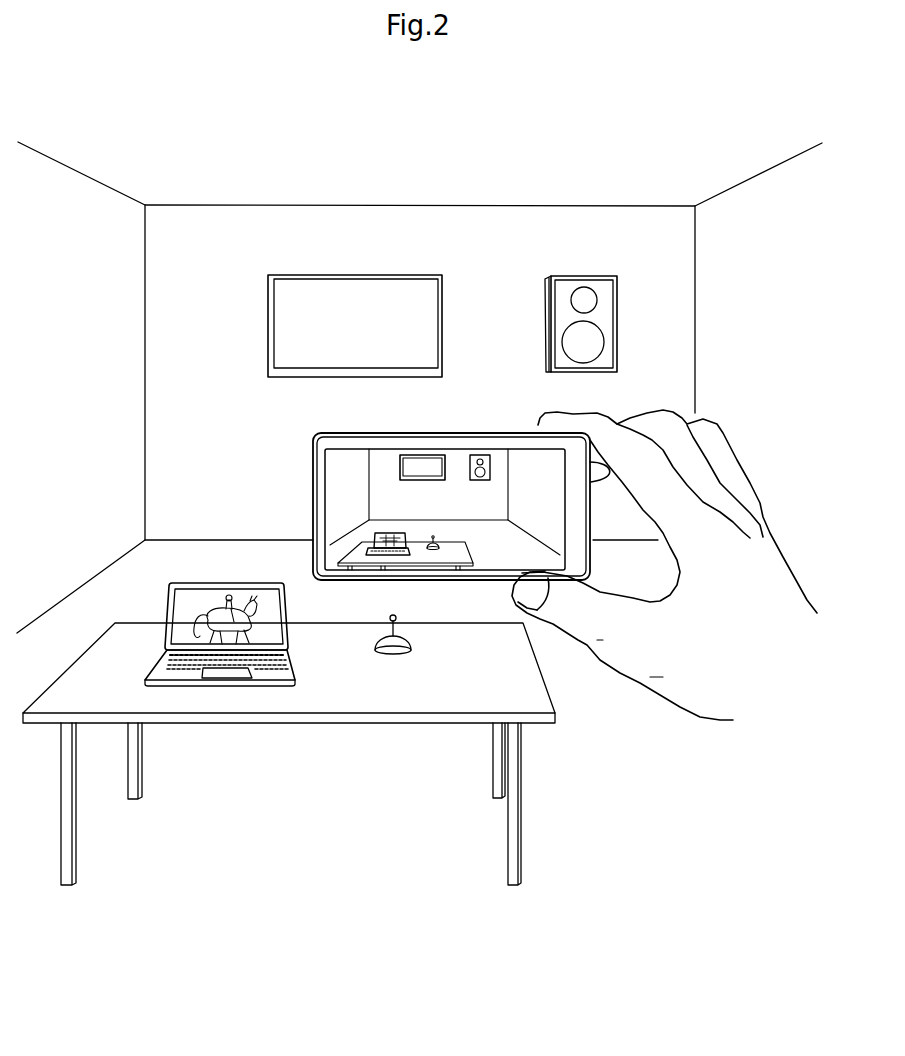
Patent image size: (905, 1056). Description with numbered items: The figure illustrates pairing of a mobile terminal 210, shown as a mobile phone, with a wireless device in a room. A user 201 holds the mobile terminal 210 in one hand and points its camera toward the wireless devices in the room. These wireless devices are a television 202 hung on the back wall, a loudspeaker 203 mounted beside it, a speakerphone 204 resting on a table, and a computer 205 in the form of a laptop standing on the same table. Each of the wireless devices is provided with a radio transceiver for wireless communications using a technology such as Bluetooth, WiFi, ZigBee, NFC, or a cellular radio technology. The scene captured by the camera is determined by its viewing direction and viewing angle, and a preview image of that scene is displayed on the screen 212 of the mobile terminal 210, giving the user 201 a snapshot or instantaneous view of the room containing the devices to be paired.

The user 201 is at (733, 618).
The television 202 is at (360, 275).
The loudspeaker 203 is at (583, 275).
The speakerphone 204 is at (413, 649).
The computer 205 is at (162, 657).
The mobile terminal 210 is at (417, 506).
The screen 212 is at (377, 489).